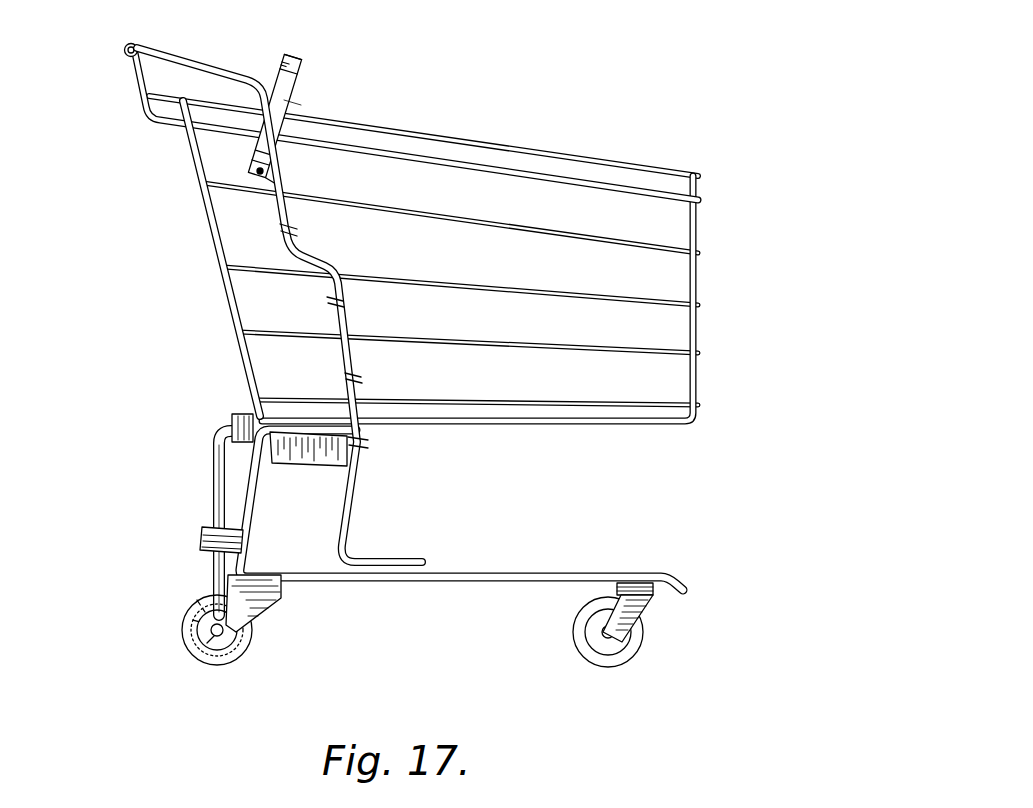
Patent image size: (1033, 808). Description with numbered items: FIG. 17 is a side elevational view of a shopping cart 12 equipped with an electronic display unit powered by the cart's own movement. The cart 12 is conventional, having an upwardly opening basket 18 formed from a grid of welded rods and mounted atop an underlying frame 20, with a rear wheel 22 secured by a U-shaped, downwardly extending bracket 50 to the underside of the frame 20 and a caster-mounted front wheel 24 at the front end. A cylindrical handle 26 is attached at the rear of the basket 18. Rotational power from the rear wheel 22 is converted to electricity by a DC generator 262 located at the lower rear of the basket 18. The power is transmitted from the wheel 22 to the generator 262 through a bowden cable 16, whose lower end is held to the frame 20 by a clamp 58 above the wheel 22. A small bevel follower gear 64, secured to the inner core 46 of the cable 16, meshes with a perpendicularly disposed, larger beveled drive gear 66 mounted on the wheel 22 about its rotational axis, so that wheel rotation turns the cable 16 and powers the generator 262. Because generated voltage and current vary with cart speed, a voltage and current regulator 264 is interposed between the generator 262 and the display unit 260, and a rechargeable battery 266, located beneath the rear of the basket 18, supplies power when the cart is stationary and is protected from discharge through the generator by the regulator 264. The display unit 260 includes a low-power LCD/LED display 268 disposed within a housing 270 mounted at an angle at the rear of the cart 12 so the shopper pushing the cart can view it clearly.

The shopping cart 12 is at (650, 160).
The handle 26 is at (124, 52).
The basket 18 is at (208, 240).
The powered display unit 260 is at (324, 80).
The LCD/LED display 268 is at (281, 79).
The housing 270 is at (297, 51).
The frame 20 is at (353, 497).
The bowden cable 16 is at (212, 432).
The DC generator 262 is at (232, 416).
The voltage and current regulator 264 is at (240, 414).
The rechargeable battery 266 is at (303, 467).
The clamp 58 is at (208, 530).
The rear wheel 22 is at (236, 660).
The bracket 50 is at (280, 602).
The inner core 46 is at (197, 600).
The bevel follower gear 64 is at (193, 620).
The drive gear 66 is at (207, 643).
The front wheel 24 is at (645, 640).